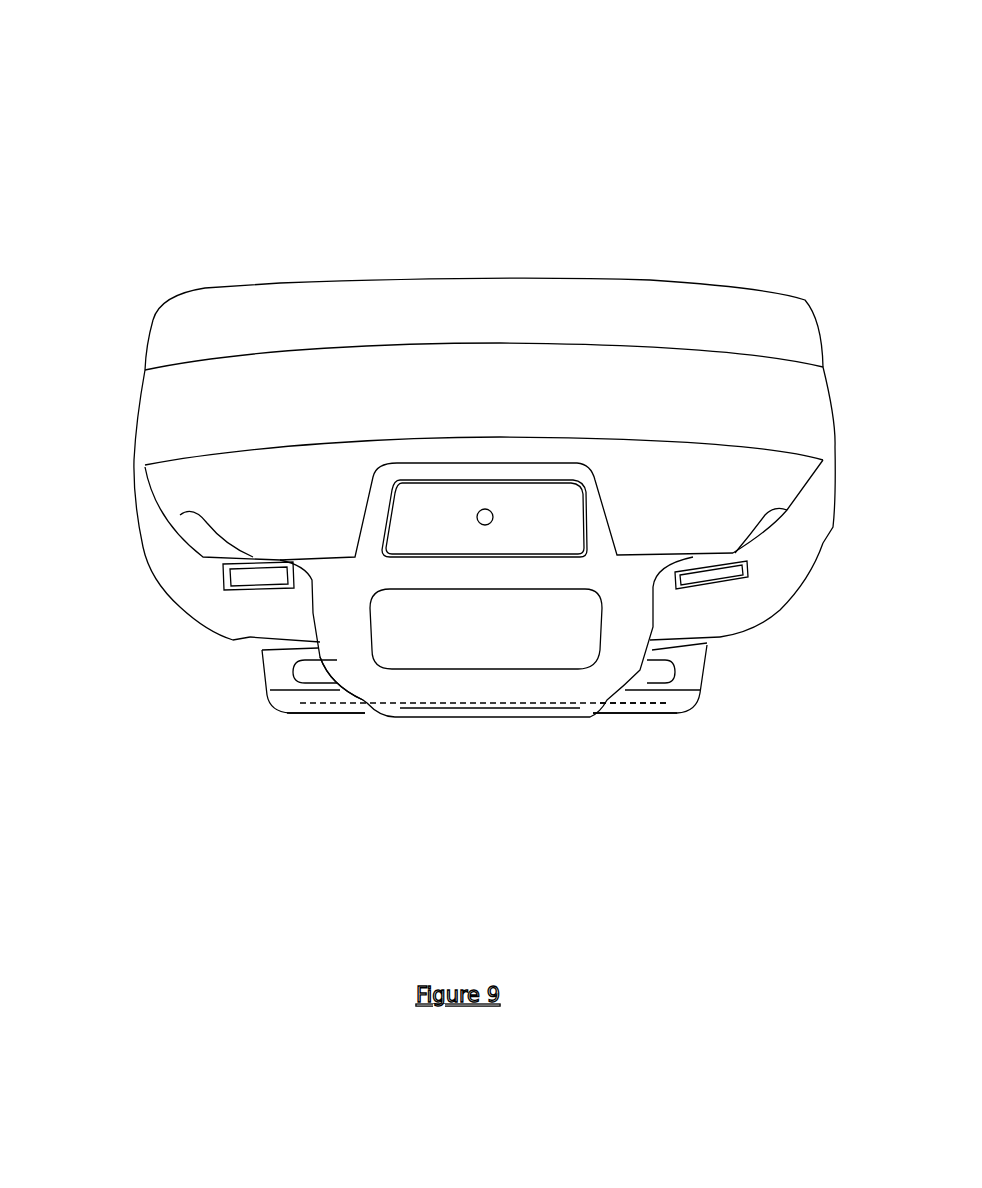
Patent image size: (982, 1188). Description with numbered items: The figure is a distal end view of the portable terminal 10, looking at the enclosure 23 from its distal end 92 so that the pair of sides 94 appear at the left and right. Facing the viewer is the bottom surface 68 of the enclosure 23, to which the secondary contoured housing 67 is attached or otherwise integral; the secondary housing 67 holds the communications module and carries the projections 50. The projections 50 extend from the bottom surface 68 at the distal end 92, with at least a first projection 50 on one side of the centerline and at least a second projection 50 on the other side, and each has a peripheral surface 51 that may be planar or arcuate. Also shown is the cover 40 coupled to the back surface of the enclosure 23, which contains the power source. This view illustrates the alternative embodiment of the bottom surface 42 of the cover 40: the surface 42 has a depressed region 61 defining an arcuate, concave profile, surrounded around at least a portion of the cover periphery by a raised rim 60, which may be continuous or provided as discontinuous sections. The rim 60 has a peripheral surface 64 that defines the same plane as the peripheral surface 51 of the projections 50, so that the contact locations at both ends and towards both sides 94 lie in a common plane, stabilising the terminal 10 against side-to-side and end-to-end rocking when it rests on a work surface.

The portable terminal 10 is at (508, 220).
The enclosure 23 is at (362, 393).
The sides 94 is at (113, 297).
The secondary contoured housing 67 is at (337, 633).
The bottom surface 68 is at (238, 672).
The cover 40 is at (683, 667).
The bottom surface of the cover 42 is at (672, 722).
The raised rim 60 is at (288, 707).
The depressed region 61 is at (615, 713).
The peripheral surface of the rim 64 is at (663, 715).
The peripheral surface of the projections 51 is at (483, 718).
The projections 50 is at (423, 712).
The distal end 92 is at (323, 805).